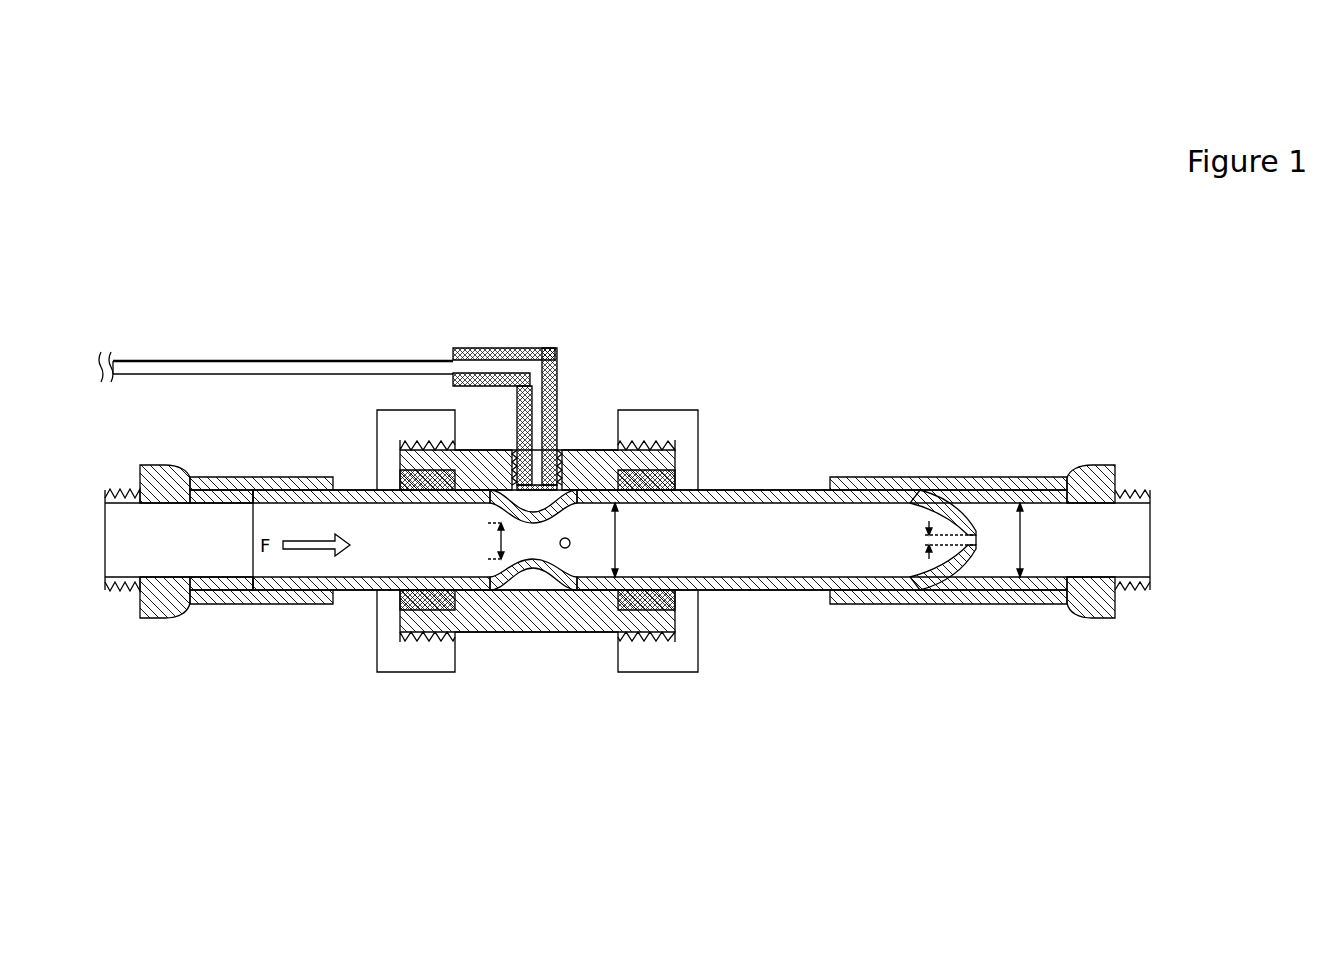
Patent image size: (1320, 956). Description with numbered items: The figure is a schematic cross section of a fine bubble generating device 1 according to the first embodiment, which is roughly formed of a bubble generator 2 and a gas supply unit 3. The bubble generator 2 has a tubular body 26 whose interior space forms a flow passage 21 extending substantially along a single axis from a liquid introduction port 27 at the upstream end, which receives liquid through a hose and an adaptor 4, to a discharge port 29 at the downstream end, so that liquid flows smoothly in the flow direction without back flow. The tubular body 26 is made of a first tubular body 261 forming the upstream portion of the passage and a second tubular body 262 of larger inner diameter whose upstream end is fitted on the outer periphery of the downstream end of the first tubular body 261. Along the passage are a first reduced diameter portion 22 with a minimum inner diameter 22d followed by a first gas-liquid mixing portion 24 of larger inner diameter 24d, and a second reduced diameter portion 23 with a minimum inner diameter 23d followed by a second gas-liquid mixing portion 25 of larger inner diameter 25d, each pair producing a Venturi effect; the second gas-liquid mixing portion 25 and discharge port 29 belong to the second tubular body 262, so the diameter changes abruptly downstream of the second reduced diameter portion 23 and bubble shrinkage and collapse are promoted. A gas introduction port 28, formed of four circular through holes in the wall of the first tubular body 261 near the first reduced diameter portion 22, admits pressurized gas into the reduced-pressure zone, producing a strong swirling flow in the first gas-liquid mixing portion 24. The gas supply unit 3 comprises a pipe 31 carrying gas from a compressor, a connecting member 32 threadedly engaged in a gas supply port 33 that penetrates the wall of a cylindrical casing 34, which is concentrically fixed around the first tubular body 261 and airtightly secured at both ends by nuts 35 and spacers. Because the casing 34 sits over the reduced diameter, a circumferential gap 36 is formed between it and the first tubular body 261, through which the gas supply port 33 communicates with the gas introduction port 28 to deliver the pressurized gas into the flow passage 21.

The fine bubble generating device 1 is at (757, 317).
The bubble generator 2 is at (745, 483).
The gas supply unit 3 is at (461, 331).
The adaptor 4 is at (178, 634).
The flow passage 21 is at (360, 528).
The first reduced diameter portion 22 is at (545, 570).
The minimum inner diameter of the first reduced diameter portion 22d is at (473, 541).
The second reduced diameter portion 23 is at (946, 522).
The minimum inner diameter of the second reduced diameter portion 23d is at (926, 540).
The first gas-liquid mixing portion 24 is at (707, 550).
The inner diameter of the first gas-liquid mixing portion 24d is at (638, 540).
The second gas-liquid mixing portion 25 is at (990, 516).
The inner diameter of the second gas-liquid mixing portion 25d is at (1044, 540).
The tubular body 26 is at (980, 664).
The liquid introduction port 27 is at (246, 518).
The gas introduction port 28 is at (571, 549).
The discharge port 29 is at (1156, 522).
The pipe 31 is at (225, 360).
The connecting member 32 is at (518, 348).
The gas supply port 33 is at (577, 451).
The casing 34 is at (609, 448).
The nuts 35 is at (665, 410).
The gap 36 is at (506, 456).
The first tubular body 261 is at (783, 593).
The second tubular body 262 is at (963, 607).